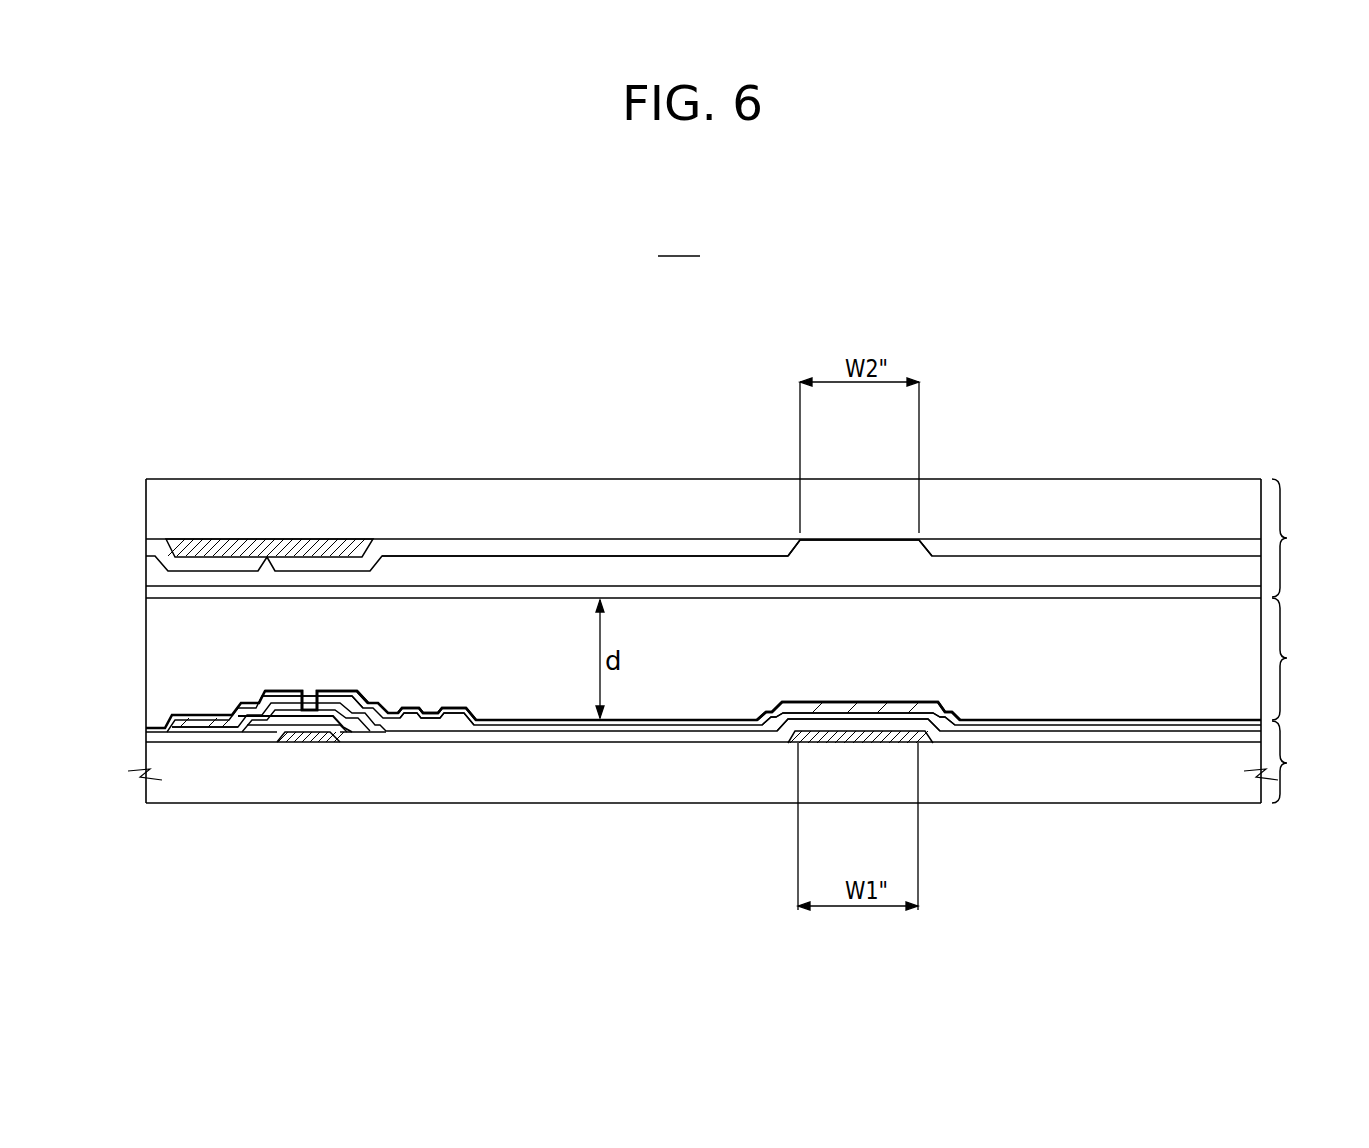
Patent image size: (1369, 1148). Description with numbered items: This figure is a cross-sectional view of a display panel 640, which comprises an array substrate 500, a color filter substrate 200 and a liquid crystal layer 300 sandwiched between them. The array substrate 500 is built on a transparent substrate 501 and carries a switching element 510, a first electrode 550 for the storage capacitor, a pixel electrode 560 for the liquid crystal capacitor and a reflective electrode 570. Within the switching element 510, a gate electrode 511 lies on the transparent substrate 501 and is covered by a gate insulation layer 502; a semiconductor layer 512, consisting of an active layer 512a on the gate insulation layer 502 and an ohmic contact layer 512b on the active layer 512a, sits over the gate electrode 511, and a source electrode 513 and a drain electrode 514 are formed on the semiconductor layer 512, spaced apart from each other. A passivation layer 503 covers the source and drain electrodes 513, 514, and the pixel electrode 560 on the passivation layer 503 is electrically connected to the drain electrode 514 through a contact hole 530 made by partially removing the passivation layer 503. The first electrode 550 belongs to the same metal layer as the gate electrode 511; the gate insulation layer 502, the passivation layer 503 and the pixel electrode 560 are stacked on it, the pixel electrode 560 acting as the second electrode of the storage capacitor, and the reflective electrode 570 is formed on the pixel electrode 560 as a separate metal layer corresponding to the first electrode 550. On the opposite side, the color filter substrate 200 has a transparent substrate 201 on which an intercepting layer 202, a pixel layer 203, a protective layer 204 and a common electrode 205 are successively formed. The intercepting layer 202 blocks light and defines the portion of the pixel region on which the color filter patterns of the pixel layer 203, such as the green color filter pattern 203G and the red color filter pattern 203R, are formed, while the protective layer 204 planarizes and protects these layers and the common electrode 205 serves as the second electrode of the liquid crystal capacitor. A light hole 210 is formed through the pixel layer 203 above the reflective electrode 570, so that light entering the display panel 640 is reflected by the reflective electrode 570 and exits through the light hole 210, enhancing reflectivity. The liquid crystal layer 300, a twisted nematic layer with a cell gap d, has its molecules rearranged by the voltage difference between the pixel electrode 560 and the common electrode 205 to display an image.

The display panel 640 is at (679, 243).
The color filter substrate 200 is at (1303, 538).
The transparent substrate 201 is at (148, 495).
The intercepting layer 202 is at (178, 540).
The pixel layer 203 is at (153, 547).
The green color filter pattern 203G is at (252, 539).
The red color filter pattern 203R is at (708, 548).
The light hole 210 is at (860, 553).
The protective layer 204 is at (153, 573).
The common electrode 205 is at (152, 592).
The liquid crystal layer 300 is at (1303, 659).
The array substrate 500 is at (1303, 762).
The transparent substrate 501 is at (152, 788).
The gate insulation layer 502 is at (152, 737).
The passivation layer 503 is at (152, 728).
The switching element 510 is at (351, 826).
The gate electrode 511 is at (300, 740).
The semiconductor layer 512 is at (396, 804).
The active layer 512a is at (337, 700).
The ohmic contact layer 512b is at (345, 705).
The source electrode 513 is at (223, 723).
The drain electrode 514 is at (334, 700).
The contact hole 530 is at (430, 707).
The first electrode 550 is at (848, 738).
The pixel electrode 560 is at (622, 725).
The reflective electrode 570 is at (856, 705).